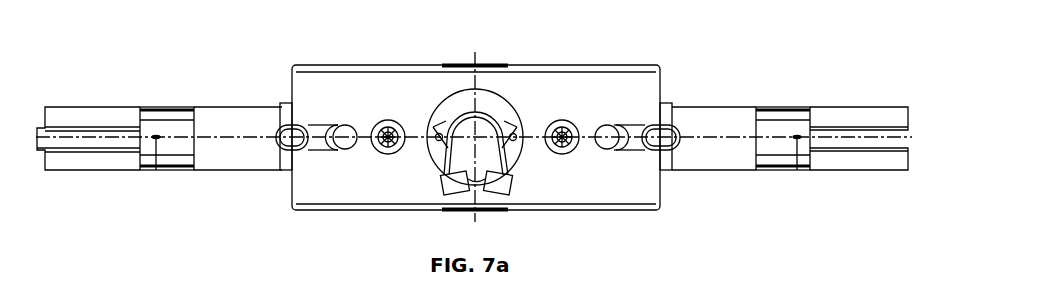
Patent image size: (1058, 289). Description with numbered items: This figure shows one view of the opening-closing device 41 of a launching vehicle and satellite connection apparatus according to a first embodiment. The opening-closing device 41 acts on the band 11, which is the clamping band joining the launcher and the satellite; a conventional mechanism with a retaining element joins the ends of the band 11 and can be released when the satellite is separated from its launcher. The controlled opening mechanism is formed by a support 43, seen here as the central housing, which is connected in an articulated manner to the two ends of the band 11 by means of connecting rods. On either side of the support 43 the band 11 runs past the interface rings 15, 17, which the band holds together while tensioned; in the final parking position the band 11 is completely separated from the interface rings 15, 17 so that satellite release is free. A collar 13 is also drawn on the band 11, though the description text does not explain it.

The interface ring 17 is at (88, 103).
The interface ring 15 is at (78, 117).
The collar 13 is at (173, 118).
The band 11 is at (222, 128).
The support 43 is at (360, 85).
The opening-closing device 41 is at (213, 210).